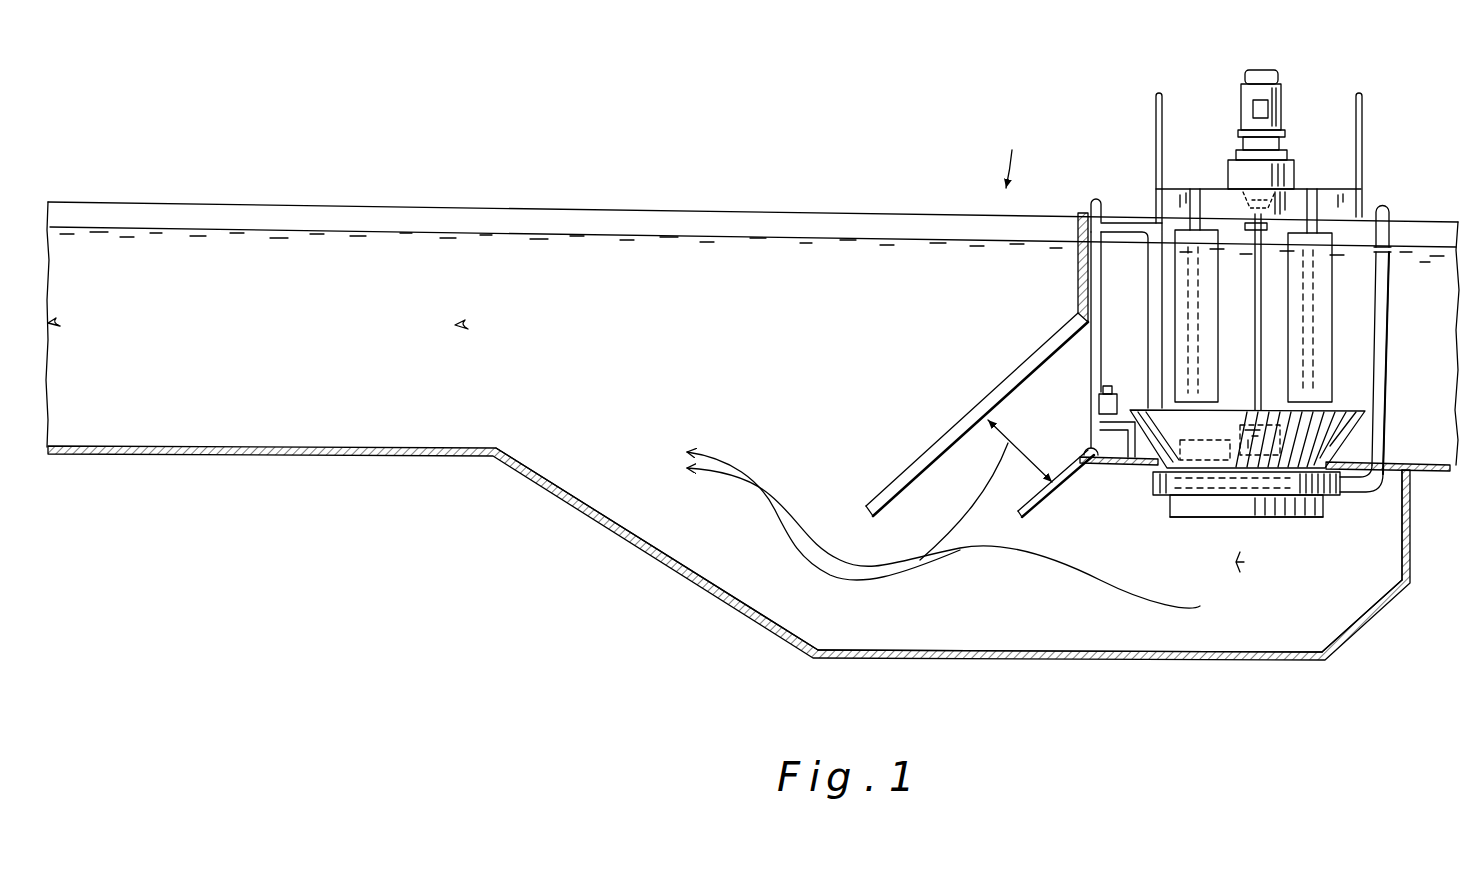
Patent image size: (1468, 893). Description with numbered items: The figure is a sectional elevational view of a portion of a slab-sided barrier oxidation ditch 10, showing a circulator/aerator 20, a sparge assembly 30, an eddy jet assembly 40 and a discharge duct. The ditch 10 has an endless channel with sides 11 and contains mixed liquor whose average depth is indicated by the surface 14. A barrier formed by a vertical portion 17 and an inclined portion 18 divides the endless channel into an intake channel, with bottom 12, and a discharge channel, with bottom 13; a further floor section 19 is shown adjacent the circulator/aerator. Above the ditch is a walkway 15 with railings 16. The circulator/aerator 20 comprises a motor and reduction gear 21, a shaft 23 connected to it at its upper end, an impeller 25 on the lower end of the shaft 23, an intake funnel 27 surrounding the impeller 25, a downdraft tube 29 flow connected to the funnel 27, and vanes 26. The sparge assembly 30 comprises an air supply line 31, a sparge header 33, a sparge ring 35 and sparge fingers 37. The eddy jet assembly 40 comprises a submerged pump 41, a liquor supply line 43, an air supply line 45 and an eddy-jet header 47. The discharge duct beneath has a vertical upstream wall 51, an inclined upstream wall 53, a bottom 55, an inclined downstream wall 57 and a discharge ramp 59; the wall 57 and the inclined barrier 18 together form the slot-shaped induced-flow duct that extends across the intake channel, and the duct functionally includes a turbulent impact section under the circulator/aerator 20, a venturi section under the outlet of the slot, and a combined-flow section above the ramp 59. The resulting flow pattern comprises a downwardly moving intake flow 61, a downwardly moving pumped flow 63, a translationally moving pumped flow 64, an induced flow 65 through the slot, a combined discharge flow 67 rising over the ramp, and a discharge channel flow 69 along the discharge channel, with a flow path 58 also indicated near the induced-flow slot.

The barrier oxidation ditch 10 is at (1008, 153).
The sides 11 is at (536, 218).
The bottom of intake channel 12 is at (1448, 466).
The bottom of discharge channel 13 is at (348, 447).
The surface 14 is at (870, 238).
The walkway 15 is at (1312, 188).
The railings 16 is at (1363, 116).
The vertical portion 17 is at (1077, 288).
The inclined portion 18 is at (956, 422).
The tank floor section 19 is at (1392, 457).
The circulator/aerator 20 is at (1263, 120).
The motor and reduction gear 21 is at (1282, 95).
The shaft 23 is at (1246, 260).
The impeller 25 is at (1216, 442).
The vanes 26 is at (1186, 270).
The intake funnel 27 is at (1352, 410).
The downdraft tube 29 is at (1323, 514).
The sparge assembly 30 is at (1392, 196).
The air supply line 31 is at (1386, 282).
The sparge header 33 is at (1342, 492).
The sparge ring 35 is at (1167, 507).
The sparge fingers 37 is at (1235, 524).
The eddy jet assembly 40 is at (1109, 346).
The submerged pump 41 is at (1116, 404).
The liquor supply line 43 is at (1120, 222).
The air supply line 45 is at (1094, 198).
The eddy-jet header 47 is at (1095, 460).
The vertical upstream wall 51 is at (1411, 540).
The inclined upstream wall 53 is at (1350, 616).
The bottom 55 is at (1238, 649).
The inclined downstream wall 57 is at (1044, 508).
The flow path 58 is at (1008, 443).
The discharge ramp 59 is at (604, 510).
The intake flow 61 is at (1330, 380).
The pumped flow 63 is at (1244, 562).
The pumped flow 64 is at (1056, 564).
The induced flow 65 is at (1038, 438).
The combined discharge flow 67 is at (783, 504).
The discharge channel flow 69 is at (60, 322).